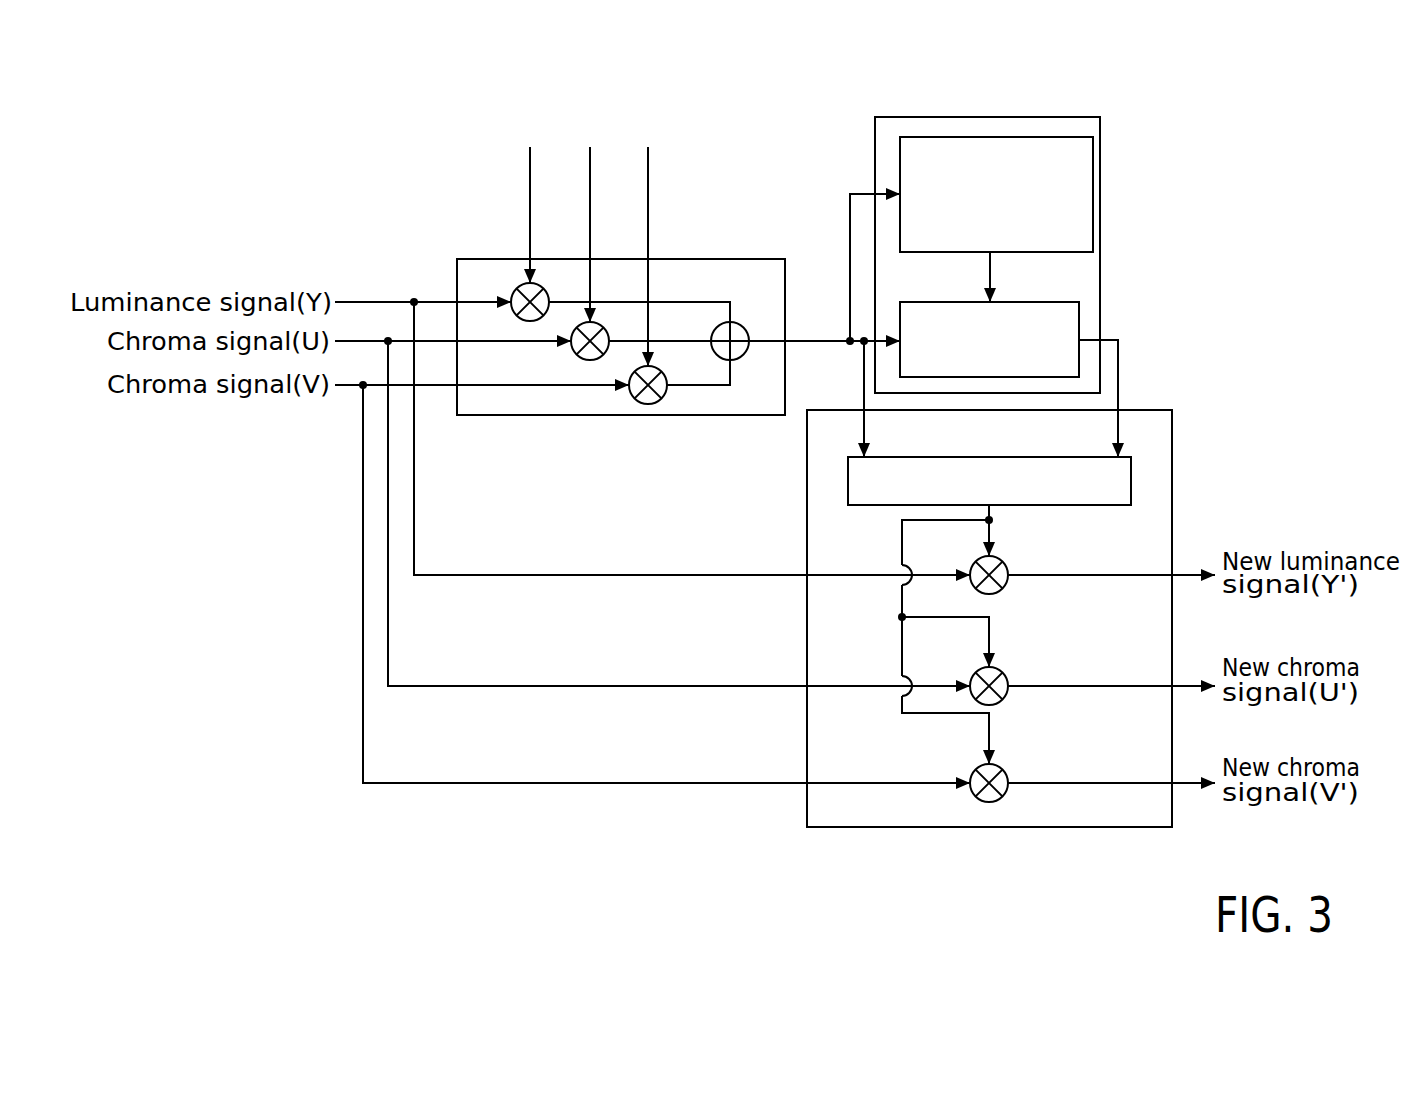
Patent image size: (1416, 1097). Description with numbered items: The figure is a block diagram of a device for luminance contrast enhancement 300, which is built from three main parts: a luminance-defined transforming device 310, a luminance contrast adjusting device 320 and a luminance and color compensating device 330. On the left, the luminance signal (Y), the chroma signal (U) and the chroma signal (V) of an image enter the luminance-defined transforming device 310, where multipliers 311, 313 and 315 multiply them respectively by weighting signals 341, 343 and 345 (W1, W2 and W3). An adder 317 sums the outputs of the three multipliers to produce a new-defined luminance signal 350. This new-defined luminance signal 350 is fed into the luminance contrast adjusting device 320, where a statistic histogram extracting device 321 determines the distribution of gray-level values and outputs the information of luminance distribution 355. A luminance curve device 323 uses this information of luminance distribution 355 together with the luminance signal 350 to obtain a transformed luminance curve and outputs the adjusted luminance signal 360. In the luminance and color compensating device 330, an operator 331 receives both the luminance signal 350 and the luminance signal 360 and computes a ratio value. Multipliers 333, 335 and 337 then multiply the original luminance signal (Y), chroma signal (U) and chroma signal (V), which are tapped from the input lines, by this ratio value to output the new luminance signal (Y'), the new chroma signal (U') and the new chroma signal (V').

The device for luminance contrast enhancement 300 is at (230, 170).
The luminance-defined transforming device 310 is at (497, 259).
The multiplier 311 is at (544, 289).
The multiplier 313 is at (603, 328).
The multiplier 315 is at (661, 372).
The adder 317 is at (744, 328).
The weighting signal 341 is at (528, 178).
The weighting signal 343 is at (588, 172).
The weighting signal 345 is at (647, 170).
The new-defined luminance signal 350 is at (812, 340).
The luminance contrast adjusting device 320 is at (1100, 228).
The statistic histogram extracting device 321 is at (1093, 194).
The information of luminance distribution 355 is at (990, 265).
The luminance curve device 323 is at (1079, 327).
The adjusted luminance signal 360 is at (1118, 378).
The luminance and color compensating device 330 is at (1172, 458).
The operator 331 is at (978, 457).
The multiplier 333 is at (1003, 562).
The multiplier 335 is at (1003, 673).
The multiplier 337 is at (1003, 770).